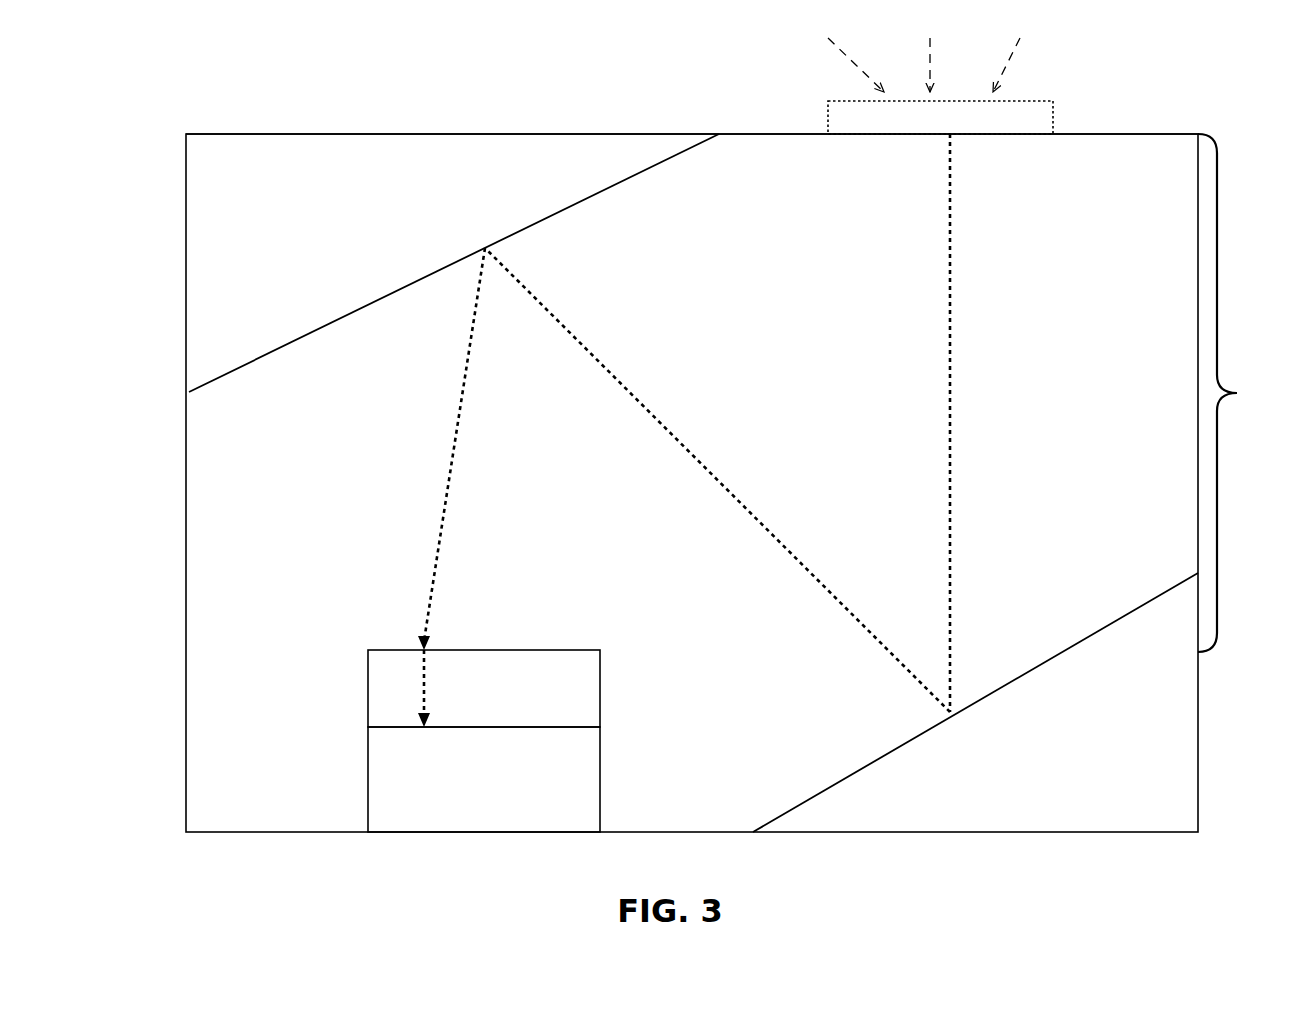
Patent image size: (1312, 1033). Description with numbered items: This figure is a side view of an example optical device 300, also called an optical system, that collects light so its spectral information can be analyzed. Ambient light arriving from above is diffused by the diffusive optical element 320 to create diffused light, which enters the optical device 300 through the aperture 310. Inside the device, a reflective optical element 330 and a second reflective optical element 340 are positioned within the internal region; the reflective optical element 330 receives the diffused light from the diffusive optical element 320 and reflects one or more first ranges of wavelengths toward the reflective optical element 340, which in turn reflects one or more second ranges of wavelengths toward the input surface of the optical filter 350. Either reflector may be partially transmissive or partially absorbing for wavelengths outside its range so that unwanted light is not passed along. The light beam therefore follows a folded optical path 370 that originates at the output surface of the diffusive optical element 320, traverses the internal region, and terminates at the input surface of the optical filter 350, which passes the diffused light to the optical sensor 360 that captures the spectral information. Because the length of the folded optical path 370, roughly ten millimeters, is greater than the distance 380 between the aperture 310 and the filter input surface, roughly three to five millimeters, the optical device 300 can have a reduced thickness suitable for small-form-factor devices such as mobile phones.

The optical device 300 is at (228, 122).
The aperture 310 is at (874, 143).
The diffusive optical element 320 is at (921, 129).
The reflective optical element 330 is at (1031, 756).
The reflective optical element 340 is at (376, 214).
The optical filter 350 is at (465, 700).
The optical sensor 360 is at (465, 789).
The folded optical path 370 is at (690, 462).
The distance 380 is at (1243, 393).